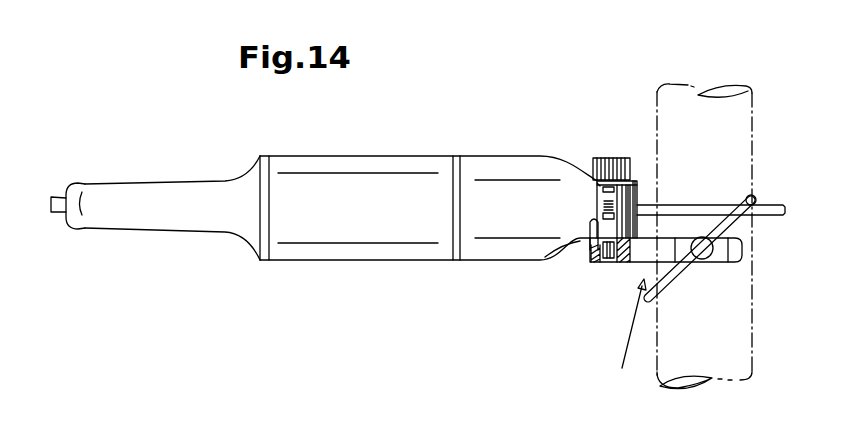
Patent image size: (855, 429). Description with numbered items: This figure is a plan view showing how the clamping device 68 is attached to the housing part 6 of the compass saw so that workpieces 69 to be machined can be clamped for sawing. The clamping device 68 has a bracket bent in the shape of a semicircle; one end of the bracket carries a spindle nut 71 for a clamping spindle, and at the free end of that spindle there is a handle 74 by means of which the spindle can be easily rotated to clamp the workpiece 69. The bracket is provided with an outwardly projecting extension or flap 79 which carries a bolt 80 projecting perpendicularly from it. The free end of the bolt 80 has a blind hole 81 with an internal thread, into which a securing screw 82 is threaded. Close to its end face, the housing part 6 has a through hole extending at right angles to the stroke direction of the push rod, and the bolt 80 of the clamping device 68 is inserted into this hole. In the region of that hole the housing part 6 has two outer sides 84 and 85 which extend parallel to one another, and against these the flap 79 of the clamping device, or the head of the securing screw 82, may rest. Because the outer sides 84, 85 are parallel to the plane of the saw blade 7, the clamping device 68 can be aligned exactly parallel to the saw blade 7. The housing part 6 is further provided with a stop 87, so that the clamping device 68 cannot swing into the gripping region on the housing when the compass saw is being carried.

The housing part 6 is at (484, 163).
The saw blade 7 is at (670, 205).
The clamping device 68 is at (627, 340).
The workpiece 69 is at (658, 100).
The spindle nut 71 is at (699, 232).
The handle 74 is at (743, 198).
The flap 79 is at (623, 263).
The bolt 80 is at (608, 226).
The blind hole 81 is at (592, 179).
The securing screw 82 is at (607, 157).
The outer side 84 is at (578, 247).
The outer side 85 is at (640, 181).
The stop 87 is at (588, 252).